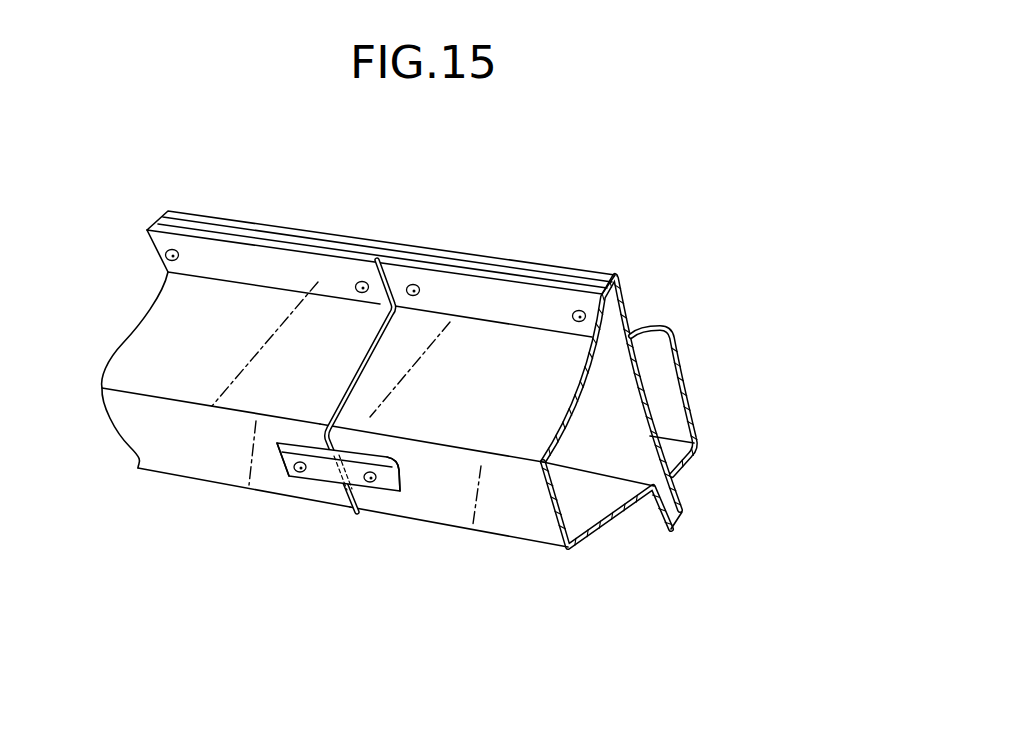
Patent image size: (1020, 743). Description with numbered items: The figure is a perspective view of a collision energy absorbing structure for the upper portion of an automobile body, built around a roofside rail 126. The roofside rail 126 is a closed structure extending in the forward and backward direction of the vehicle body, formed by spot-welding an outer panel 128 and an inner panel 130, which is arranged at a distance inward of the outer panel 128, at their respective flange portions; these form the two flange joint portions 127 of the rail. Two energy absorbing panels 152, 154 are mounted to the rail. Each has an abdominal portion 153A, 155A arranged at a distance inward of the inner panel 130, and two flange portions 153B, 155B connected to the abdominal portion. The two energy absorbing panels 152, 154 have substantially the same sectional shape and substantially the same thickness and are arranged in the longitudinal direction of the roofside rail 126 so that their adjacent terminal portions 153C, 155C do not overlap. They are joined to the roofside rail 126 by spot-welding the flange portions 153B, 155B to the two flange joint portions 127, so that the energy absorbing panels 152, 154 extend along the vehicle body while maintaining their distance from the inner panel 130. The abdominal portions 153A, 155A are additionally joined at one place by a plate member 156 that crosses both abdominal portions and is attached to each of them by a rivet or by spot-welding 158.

The roofside rail 126 is at (684, 321).
The flange joint portions 127 is at (619, 292).
The outer panel 128 is at (674, 377).
The inner panel 130 is at (652, 428).
The energy absorbing panel 152 is at (303, 298).
The abdominal portion 153A is at (157, 453).
The flange portions 153B is at (224, 248).
The terminal portion 153C is at (348, 546).
The energy absorbing panel 154 is at (488, 338).
The abdominal portion 155A is at (527, 533).
The flange portions 155B is at (437, 284).
The terminal portion 155C is at (368, 500).
The plate member 156 is at (348, 566).
The rivet or spot-welding 158 is at (288, 489).